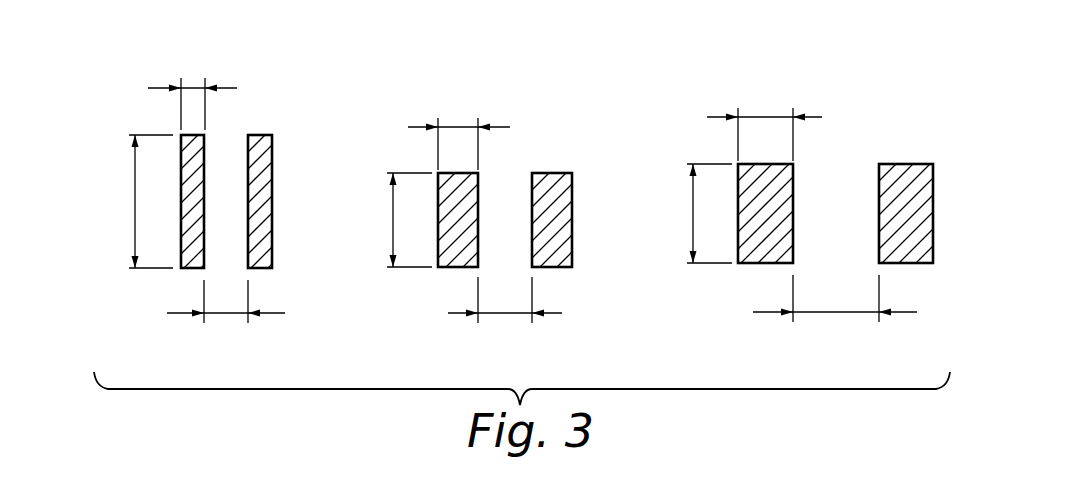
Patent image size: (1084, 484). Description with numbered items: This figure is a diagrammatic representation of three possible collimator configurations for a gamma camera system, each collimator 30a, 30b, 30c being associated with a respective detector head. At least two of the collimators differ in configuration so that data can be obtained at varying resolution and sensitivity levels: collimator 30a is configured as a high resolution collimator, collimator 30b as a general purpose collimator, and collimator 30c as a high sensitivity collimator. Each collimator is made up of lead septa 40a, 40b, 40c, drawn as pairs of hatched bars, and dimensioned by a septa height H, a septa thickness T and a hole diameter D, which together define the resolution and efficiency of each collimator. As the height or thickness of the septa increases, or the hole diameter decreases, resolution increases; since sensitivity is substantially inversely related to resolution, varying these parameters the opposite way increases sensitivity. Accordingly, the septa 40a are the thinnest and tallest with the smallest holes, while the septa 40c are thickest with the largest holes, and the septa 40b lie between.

The high resolution collimator 30a is at (282, 92).
The general purpose collimator 30b is at (556, 88).
The high sensitivity collimator 30c is at (876, 85).
The lead septa 40a is at (205, 163).
The lead septa 40b is at (478, 178).
The lead septa 40c is at (793, 178).